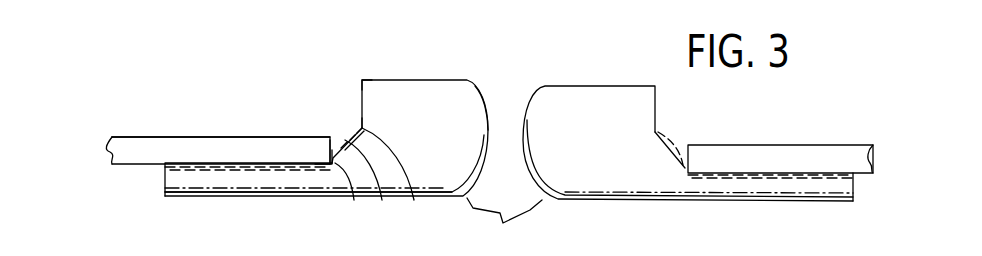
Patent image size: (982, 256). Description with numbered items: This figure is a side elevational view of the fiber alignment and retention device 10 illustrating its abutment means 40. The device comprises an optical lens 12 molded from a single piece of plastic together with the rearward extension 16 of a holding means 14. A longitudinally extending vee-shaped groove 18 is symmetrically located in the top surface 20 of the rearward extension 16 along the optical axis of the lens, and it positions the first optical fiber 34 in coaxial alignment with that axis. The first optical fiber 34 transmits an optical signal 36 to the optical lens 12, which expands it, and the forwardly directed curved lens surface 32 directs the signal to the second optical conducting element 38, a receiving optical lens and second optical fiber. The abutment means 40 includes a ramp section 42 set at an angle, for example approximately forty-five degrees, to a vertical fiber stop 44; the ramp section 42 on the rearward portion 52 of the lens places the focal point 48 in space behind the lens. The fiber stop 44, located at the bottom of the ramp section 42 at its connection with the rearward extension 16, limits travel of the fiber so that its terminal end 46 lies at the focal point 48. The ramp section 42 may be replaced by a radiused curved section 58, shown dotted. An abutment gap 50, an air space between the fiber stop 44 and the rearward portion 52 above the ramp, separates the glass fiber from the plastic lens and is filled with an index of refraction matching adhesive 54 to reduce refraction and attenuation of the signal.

The fiber alignment and retention device 10 is at (270, 80).
The optical lens 12 is at (443, 80).
The holding means 14 is at (162, 180).
The rearward extension 16 is at (270, 175).
The vee-shaped groove 18 is at (207, 172).
The top surface 20 is at (185, 160).
The forwardly directed curved lens surface 32 is at (485, 97).
The first optical fiber 34 is at (138, 147).
The optical signal 36 is at (130, 163).
The second optical conducting element 38 is at (595, 85).
The abutment means 40 is at (382, 200).
The ramp section 42 is at (414, 200).
The vertical fiber stop 44 is at (354, 200).
The terminal end 46 is at (335, 148).
The focal point 48 is at (326, 150).
The abutment gap 50 is at (350, 133).
The rearward portion 52 is at (363, 82).
The index of refraction matching adhesive 54 is at (343, 143).
The radiused curved section 58 is at (357, 127).